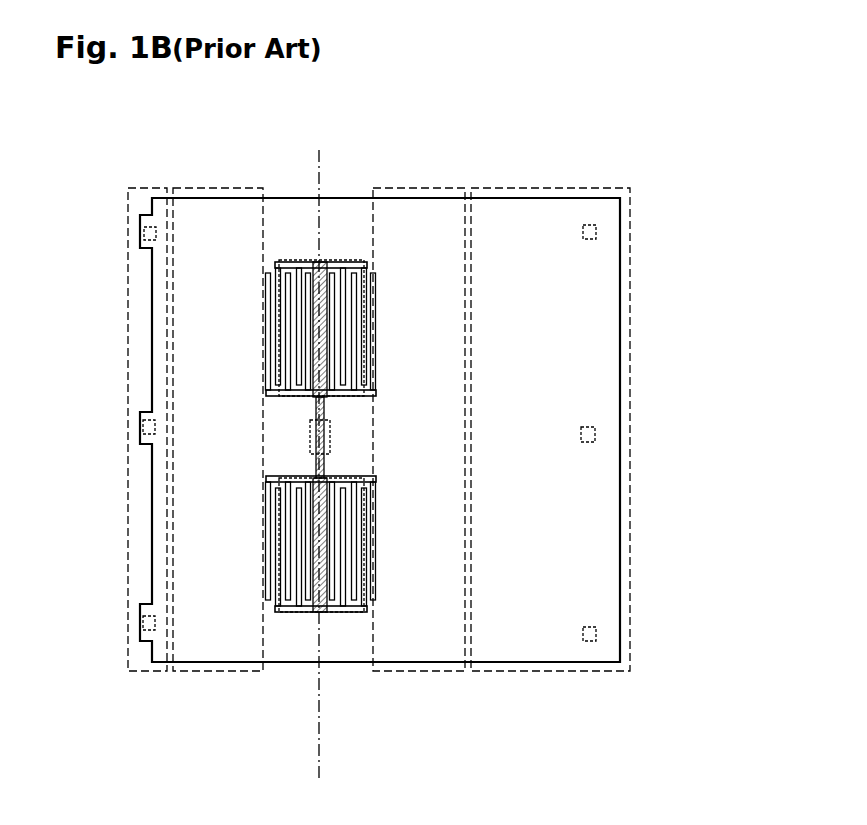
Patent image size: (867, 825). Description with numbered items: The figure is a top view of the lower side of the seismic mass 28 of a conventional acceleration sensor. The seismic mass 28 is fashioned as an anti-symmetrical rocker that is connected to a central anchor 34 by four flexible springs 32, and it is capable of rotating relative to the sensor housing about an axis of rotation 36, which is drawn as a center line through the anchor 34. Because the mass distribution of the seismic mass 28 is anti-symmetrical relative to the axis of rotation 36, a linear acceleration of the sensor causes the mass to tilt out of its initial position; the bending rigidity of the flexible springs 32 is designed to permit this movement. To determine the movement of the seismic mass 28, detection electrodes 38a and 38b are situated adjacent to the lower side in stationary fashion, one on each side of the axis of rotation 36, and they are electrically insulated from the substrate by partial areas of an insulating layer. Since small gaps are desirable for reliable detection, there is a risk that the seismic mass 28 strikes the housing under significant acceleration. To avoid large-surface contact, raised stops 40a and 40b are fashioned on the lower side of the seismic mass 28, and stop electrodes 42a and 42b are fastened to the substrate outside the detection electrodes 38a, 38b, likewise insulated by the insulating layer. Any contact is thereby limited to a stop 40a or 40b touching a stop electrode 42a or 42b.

The seismic mass 28 is at (492, 165).
The flexible springs 32 is at (341, 260).
The anchor 34 is at (331, 438).
The axis of rotation 36 is at (320, 745).
The detection electrode 38a is at (203, 671).
The detection electrode 38b is at (415, 671).
The stop 40a is at (143, 622).
The stop 40b is at (596, 632).
The stop electrode 42a is at (142, 671).
The stop electrode 42b is at (542, 671).